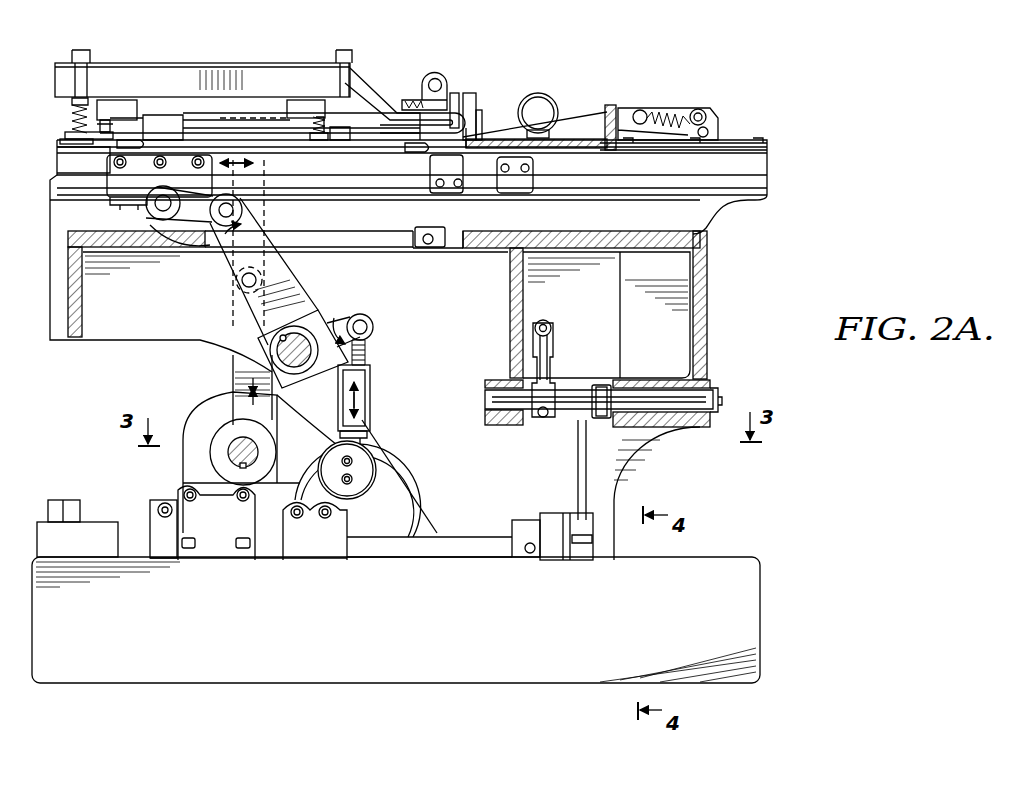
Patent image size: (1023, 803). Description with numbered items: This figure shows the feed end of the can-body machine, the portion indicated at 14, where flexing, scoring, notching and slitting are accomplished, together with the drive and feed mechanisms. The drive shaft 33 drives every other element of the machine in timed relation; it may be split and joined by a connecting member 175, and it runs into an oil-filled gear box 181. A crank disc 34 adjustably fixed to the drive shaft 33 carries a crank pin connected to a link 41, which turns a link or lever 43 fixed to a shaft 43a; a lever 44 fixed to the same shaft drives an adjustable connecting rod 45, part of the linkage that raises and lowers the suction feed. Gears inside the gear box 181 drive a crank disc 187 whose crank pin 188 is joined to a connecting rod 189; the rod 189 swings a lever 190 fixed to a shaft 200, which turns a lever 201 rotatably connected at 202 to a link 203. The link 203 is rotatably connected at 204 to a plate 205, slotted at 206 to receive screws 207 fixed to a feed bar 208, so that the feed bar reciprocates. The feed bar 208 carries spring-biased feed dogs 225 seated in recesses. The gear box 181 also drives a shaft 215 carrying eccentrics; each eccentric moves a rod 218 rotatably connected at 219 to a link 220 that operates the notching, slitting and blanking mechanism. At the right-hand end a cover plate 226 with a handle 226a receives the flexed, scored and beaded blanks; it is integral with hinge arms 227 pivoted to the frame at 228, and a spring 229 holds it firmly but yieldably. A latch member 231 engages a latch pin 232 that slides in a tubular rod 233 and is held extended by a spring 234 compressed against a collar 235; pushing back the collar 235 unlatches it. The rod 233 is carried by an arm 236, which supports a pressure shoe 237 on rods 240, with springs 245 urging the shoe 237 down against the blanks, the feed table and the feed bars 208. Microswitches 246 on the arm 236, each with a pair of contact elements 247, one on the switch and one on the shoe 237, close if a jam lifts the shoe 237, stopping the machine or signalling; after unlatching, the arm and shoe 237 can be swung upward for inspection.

The machine 14 is at (295, 58).
The drive shaft 33 is at (462, 538).
The crank disc 34 is at (565, 513).
The link 41 is at (577, 450).
The link or lever 43 is at (604, 385).
The shaft 43a is at (563, 390).
The lever 44 is at (550, 355).
The adjustable connecting rod 45 is at (547, 320).
The connecting member 175 is at (70, 505).
The gear box 181 is at (210, 540).
The crank disc 187 is at (388, 492).
The crank pin 188 is at (365, 462).
The connecting rod 189 is at (372, 378).
The lever 190 is at (340, 318).
The shaft 200 is at (300, 340).
The lever 201 is at (280, 272).
The rotatable connection 202 is at (243, 208).
The link 203 is at (210, 225).
The rotatable connection 204 is at (160, 206).
The plate 205 is at (112, 178).
The slot 206 is at (197, 165).
The screws 207 is at (113, 161).
The feed bar 208 is at (335, 173).
The shaft 215 is at (233, 450).
The rod 218 is at (238, 365).
The rotatable connection 219 is at (240, 280).
The link 220 is at (264, 220).
The feed dogs 225 is at (125, 147).
The cover plate 226 is at (572, 138).
The handle 226a is at (540, 95).
The hinge arms 227 is at (660, 108).
The pivot connection 228 is at (715, 110).
The spring 229 is at (672, 112).
The latch member 231 is at (480, 100).
The latch pin 232 is at (461, 104).
The tubular rod 233 is at (392, 95).
The spring 234 is at (430, 74).
The collar 235 is at (418, 100).
The arm 236 is at (252, 65).
The pressure plate or shoe 237 is at (60, 140).
The rods 240 is at (350, 45).
The springs 245 is at (75, 110).
The microswitches 246 is at (117, 105).
The microswitch contact elements 247 is at (128, 143).